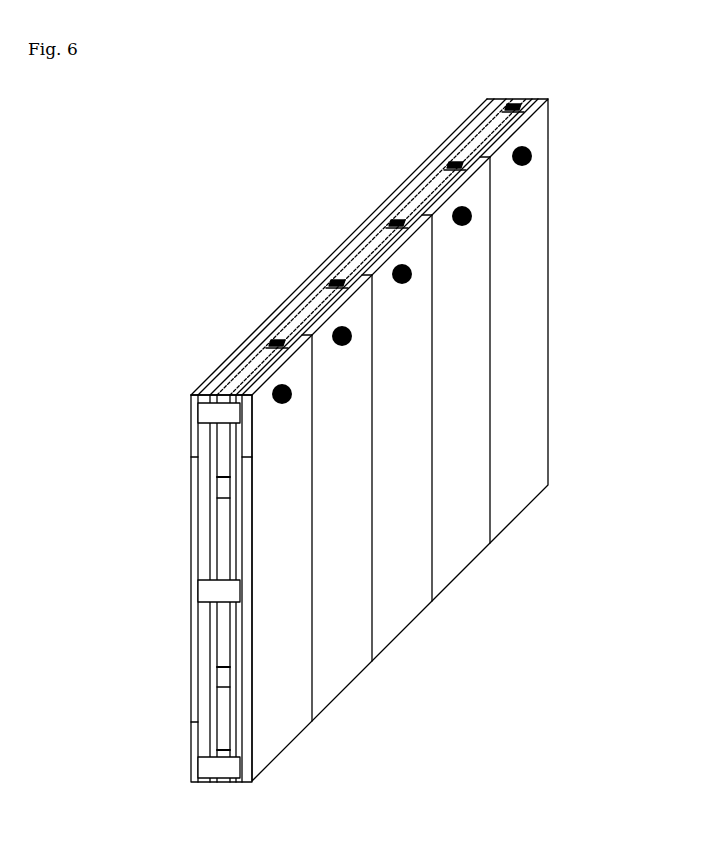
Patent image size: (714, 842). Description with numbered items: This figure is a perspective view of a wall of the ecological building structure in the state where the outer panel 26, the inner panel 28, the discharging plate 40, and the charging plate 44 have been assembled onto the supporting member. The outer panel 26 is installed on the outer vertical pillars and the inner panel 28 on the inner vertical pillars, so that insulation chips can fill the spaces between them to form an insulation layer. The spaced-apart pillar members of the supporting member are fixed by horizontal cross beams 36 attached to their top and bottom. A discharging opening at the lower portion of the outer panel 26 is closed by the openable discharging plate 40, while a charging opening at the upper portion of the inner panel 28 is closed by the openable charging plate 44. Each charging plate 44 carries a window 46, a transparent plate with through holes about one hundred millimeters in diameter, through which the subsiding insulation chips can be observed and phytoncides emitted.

The outer panel 26 is at (232, 354).
The inner panel 28 is at (530, 275).
The horizontal cross beam 36 is at (328, 275).
The discharging plate 40 is at (198, 743).
The charging plate 44 is at (535, 133).
The window 46 is at (531, 161).